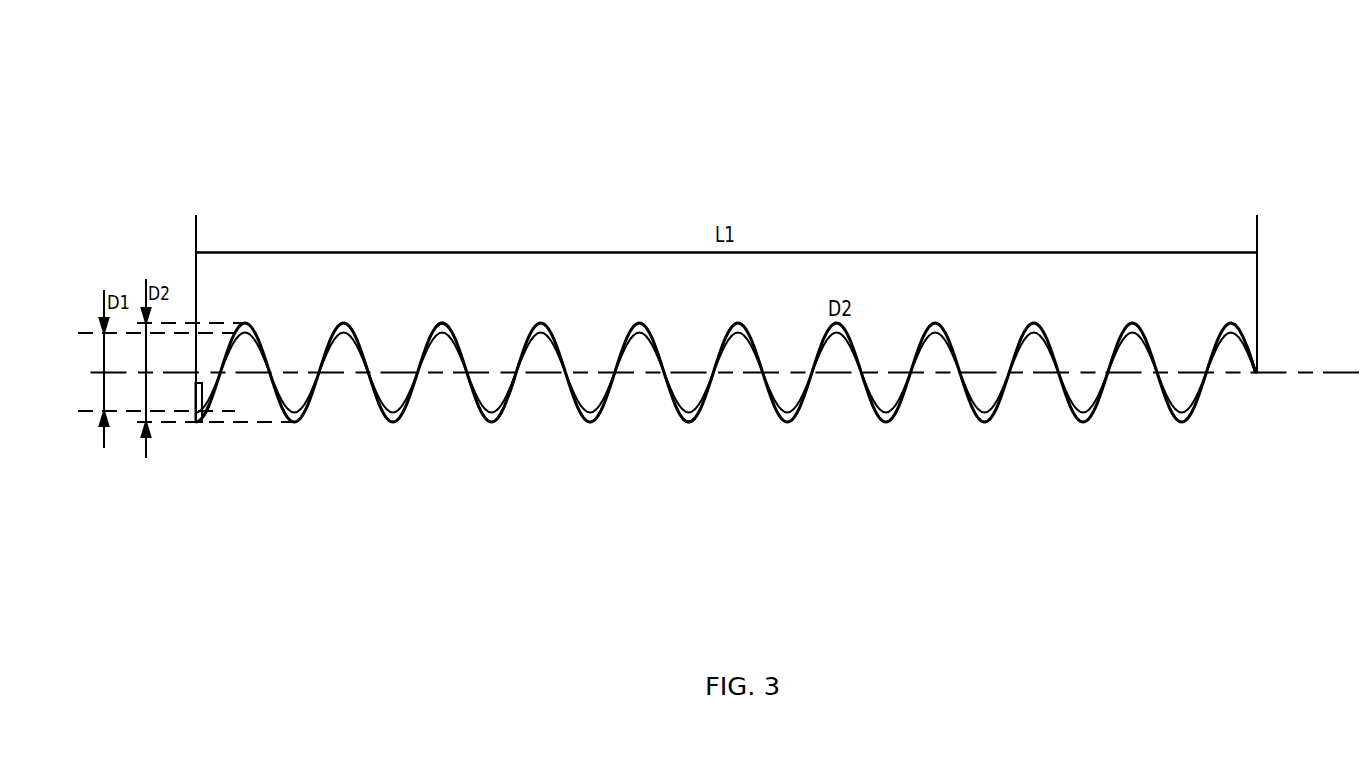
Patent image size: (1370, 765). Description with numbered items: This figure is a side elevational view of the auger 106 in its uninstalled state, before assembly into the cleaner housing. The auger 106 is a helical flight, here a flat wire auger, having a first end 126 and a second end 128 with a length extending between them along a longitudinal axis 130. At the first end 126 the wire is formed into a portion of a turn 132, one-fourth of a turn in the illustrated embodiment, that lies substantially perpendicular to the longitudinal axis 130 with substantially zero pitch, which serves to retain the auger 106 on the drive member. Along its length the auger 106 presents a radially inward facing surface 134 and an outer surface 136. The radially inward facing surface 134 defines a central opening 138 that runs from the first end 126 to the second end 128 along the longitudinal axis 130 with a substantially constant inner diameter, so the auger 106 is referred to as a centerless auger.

The auger 106 is at (965, 99).
The first end 126 is at (198, 423).
The second end 128 is at (1257, 364).
The longitudinal axis 130 is at (1330, 374).
The portion of a turn 132 is at (203, 398).
The radially inward facing surface 134 is at (443, 336).
The outer surface 136 is at (690, 422).
The central opening 138 is at (534, 400).